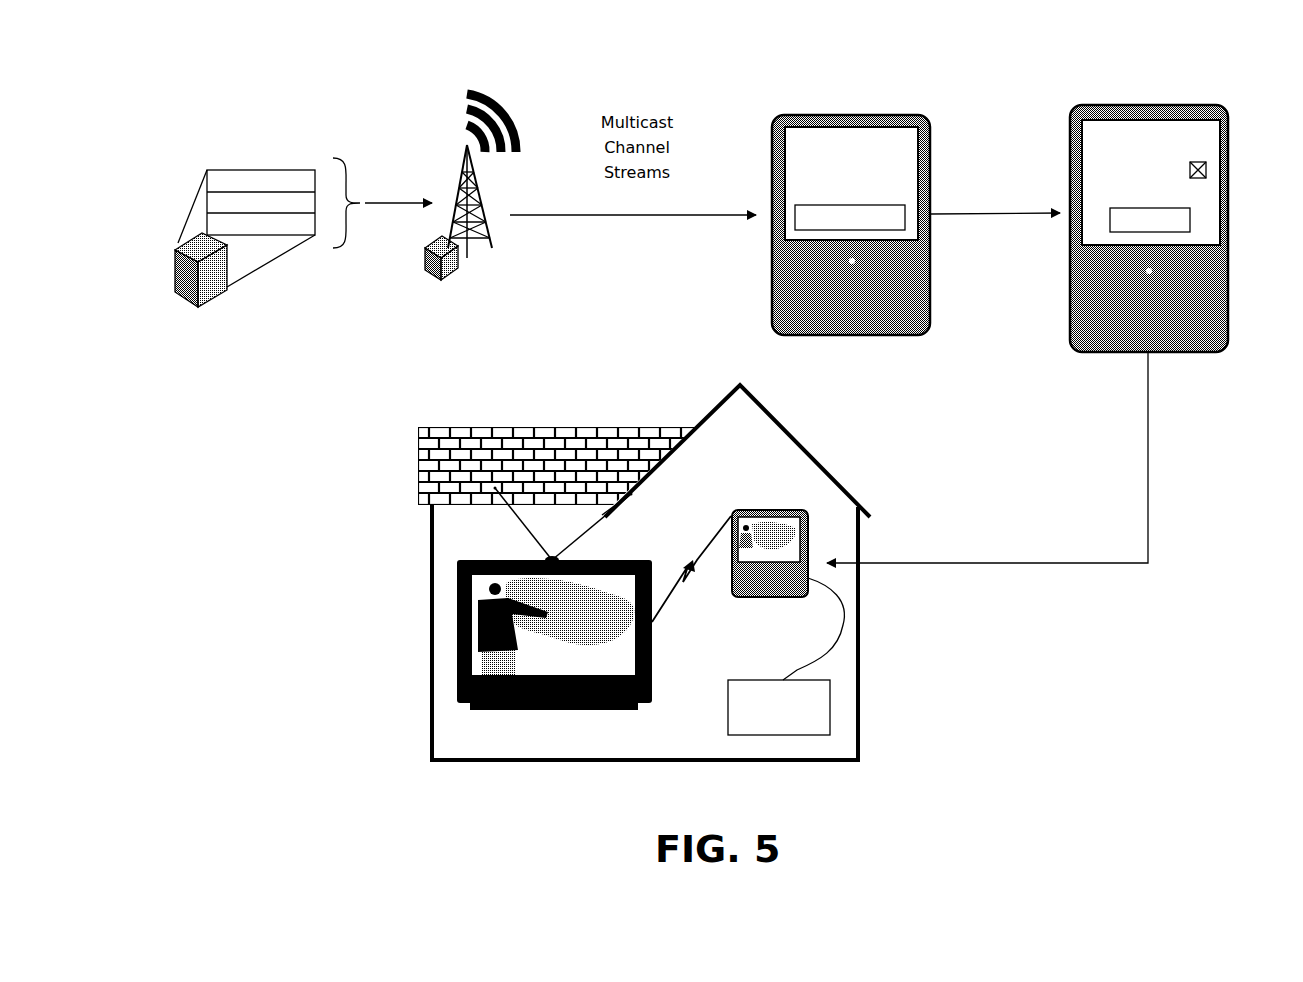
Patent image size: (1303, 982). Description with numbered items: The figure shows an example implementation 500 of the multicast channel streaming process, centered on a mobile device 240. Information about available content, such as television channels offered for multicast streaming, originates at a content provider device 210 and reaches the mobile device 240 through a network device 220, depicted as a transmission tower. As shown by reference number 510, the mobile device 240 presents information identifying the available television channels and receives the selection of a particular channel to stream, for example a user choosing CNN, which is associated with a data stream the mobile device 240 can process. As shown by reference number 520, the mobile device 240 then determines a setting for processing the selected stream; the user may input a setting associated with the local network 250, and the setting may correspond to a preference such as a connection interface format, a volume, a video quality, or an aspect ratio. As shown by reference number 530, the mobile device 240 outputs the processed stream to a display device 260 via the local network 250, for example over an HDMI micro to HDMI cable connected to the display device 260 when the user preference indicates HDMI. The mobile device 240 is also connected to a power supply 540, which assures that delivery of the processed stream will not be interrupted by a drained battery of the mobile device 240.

The example implementation 500 is at (233, 60).
The content provider device 210 is at (215, 298).
The network device 220 is at (425, 265).
The mobile device 240 is at (772, 313).
The local network 250 is at (691, 572).
The display device 260 is at (457, 608).
The channel identification and selection 510 is at (853, 115).
The setting determination 520 is at (1147, 105).
The stream output 530 is at (430, 712).
The power supply 540 is at (830, 703).